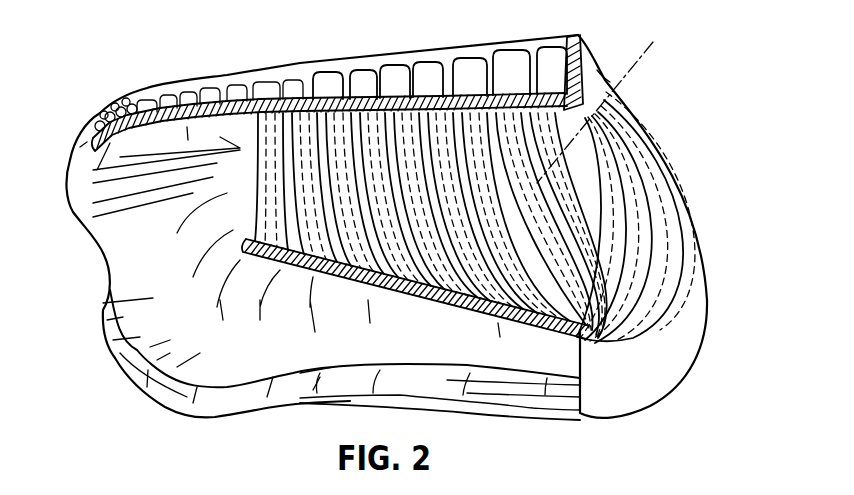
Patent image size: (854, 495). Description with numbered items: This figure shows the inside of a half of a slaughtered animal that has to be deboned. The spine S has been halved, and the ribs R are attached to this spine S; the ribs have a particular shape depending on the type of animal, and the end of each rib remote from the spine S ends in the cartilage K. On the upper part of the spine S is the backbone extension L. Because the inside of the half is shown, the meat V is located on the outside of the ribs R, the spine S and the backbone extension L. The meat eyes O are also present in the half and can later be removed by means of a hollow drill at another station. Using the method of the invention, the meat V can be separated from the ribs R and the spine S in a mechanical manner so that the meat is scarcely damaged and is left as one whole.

The spine S is at (358, 80).
The backbone extension L is at (463, 55).
The meat eyes O is at (604, 73).
The meat V is at (655, 133).
The ribs R is at (659, 212).
The cartilage K is at (442, 328).